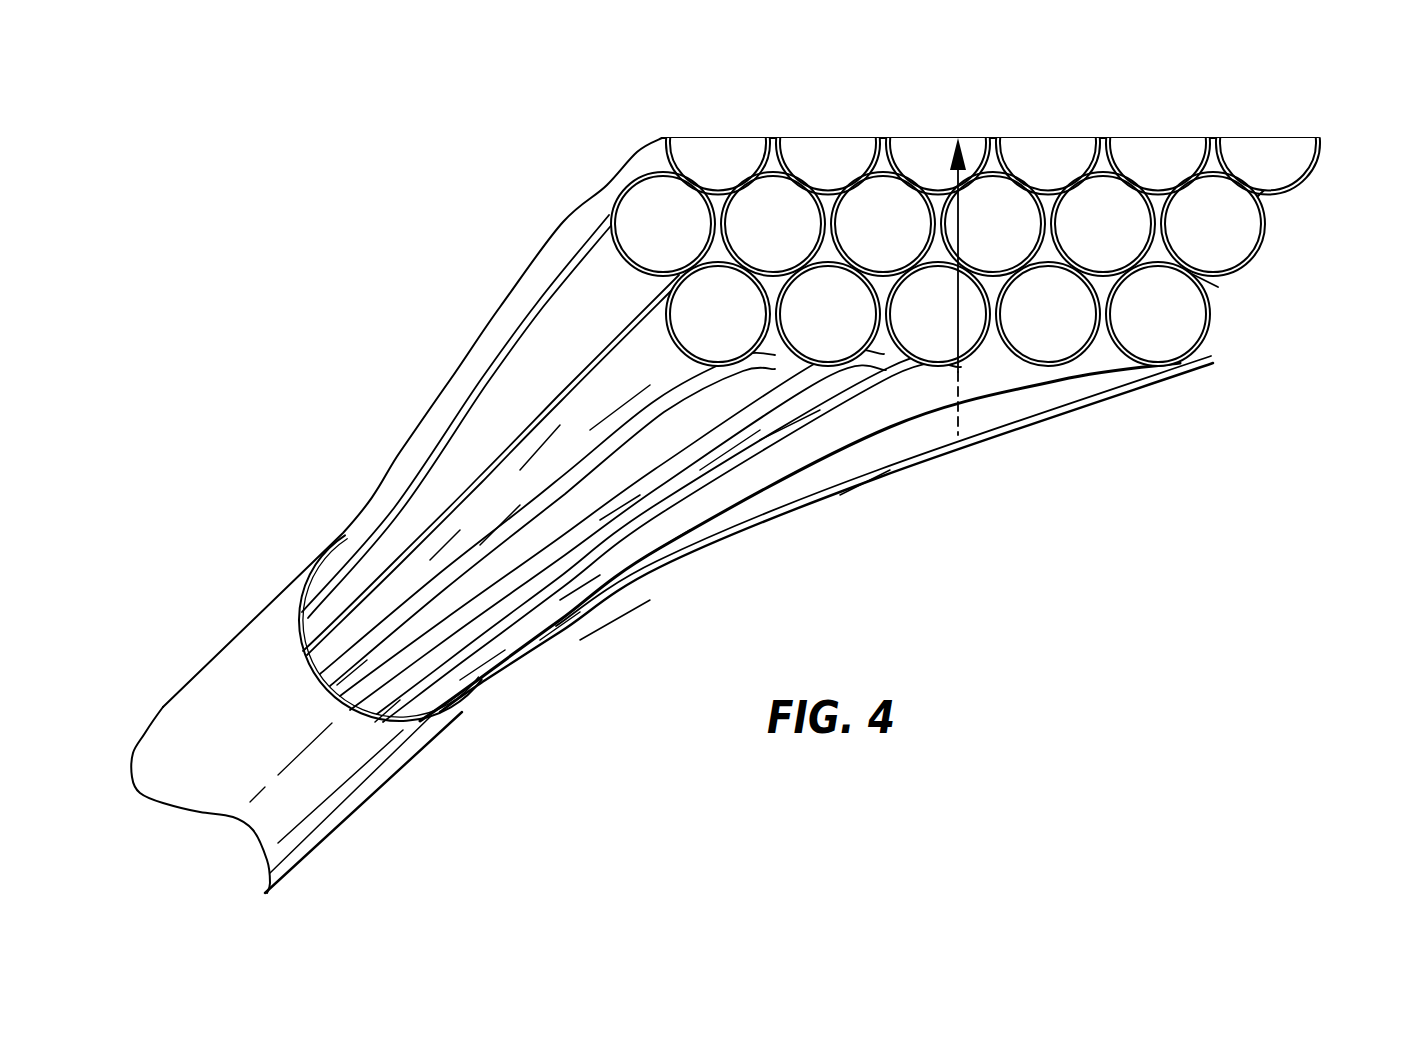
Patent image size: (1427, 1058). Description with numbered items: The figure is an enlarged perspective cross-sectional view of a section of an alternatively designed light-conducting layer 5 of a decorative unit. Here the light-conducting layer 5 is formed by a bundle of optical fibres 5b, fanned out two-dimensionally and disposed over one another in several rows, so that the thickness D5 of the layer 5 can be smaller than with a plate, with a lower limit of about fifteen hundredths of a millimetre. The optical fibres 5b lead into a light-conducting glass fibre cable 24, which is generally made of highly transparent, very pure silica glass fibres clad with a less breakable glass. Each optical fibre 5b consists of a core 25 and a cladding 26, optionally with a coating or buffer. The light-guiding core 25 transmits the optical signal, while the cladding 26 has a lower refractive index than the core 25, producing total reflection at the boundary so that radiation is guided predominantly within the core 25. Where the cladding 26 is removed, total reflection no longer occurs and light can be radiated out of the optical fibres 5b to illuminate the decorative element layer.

The glass fibre cable 24 is at (263, 647).
The core 25 is at (650, 213).
The cladding 26 is at (1228, 146).
The light-conducting layer 5 is at (1342, 130).
The optical fibres 5b is at (1012, 482).
The thickness of the layer D5 is at (965, 213).